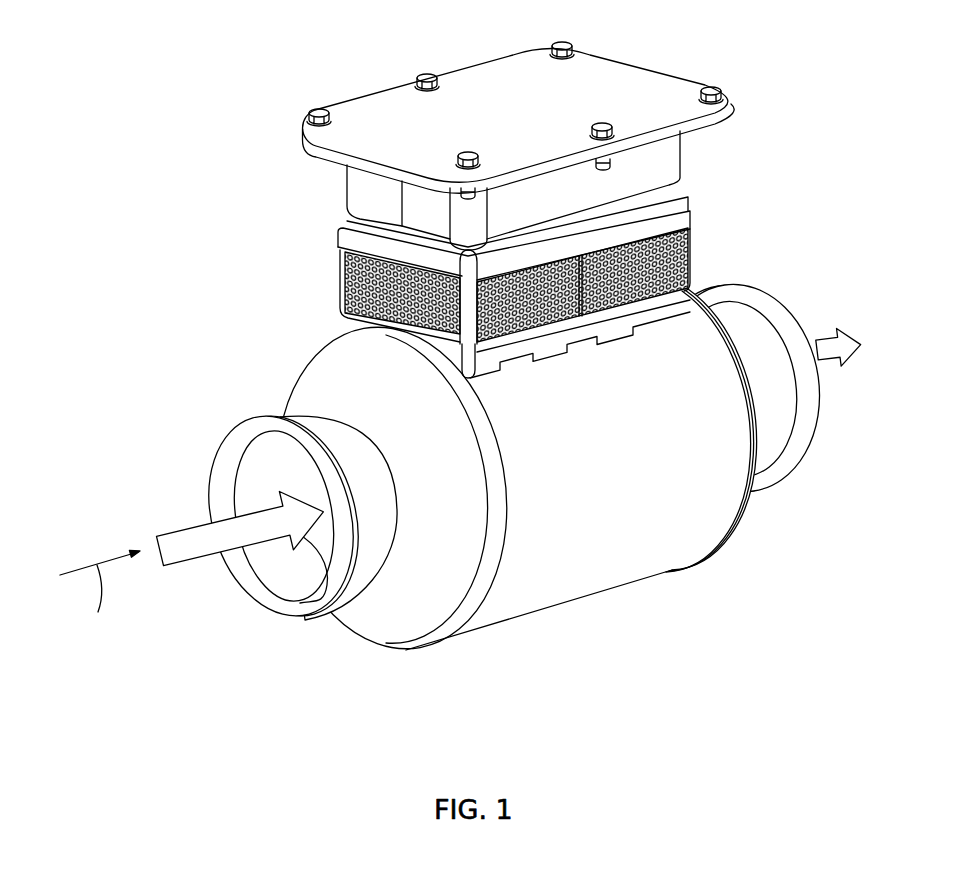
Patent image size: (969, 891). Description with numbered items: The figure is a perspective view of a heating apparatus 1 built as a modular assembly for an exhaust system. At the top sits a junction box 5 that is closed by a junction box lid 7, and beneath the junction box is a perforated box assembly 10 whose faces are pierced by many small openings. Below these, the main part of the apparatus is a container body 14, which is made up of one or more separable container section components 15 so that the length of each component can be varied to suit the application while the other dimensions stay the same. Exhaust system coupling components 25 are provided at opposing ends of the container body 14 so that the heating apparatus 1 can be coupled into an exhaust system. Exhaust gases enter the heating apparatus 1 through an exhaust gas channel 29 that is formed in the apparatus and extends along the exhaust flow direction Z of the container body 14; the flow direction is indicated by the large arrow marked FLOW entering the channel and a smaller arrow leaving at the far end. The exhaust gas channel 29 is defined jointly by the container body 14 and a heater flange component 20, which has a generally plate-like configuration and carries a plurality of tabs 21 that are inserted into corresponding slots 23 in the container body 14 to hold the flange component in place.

The heating apparatus 1 is at (464, 344).
The junction box 5 is at (675, 162).
The junction box lid 7 is at (648, 83).
The perforated box assembly 10 is at (688, 238).
The container body 14 is at (645, 590).
The container section component 15 is at (614, 460).
The heater flange component 20 is at (703, 293).
The tabs 21 is at (650, 332).
The slots 23 is at (655, 333).
The exhaust system coupling components 25 is at (323, 378).
The exhaust gas channel 29 is at (298, 478).